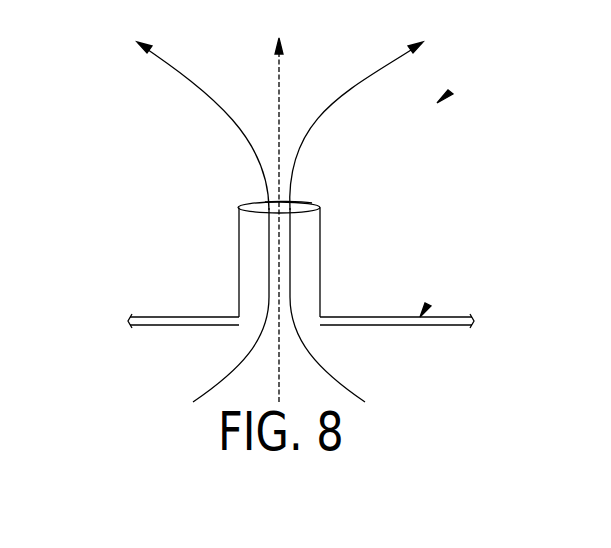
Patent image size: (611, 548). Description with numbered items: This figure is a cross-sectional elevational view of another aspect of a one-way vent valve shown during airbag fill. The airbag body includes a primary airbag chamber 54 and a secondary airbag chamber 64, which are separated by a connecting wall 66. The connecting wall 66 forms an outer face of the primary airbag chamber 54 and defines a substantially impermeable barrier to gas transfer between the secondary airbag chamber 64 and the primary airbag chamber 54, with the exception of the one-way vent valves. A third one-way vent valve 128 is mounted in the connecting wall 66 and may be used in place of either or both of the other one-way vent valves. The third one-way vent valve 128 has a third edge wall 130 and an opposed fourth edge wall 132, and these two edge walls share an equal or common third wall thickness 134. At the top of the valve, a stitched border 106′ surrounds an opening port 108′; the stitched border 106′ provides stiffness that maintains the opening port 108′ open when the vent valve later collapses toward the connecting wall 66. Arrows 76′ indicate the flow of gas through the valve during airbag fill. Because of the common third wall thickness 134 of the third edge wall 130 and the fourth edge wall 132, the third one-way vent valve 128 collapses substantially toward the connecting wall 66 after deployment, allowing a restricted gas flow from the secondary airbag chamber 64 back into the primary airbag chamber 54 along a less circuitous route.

The fluid flow 76′ is at (193, 79).
The third one-way vent valve 128 is at (440, 100).
The secondary airbag chamber 64 is at (452, 184).
The stitched border 106′ is at (238, 204).
The opening port 108′ is at (306, 203).
The third edge wall 130 is at (239, 280).
The fourth edge wall 132 is at (320, 268).
The third wall thickness 134 is at (258, 238).
The primary airbag chamber 54 is at (444, 363).
The connecting wall 66 is at (426, 305).